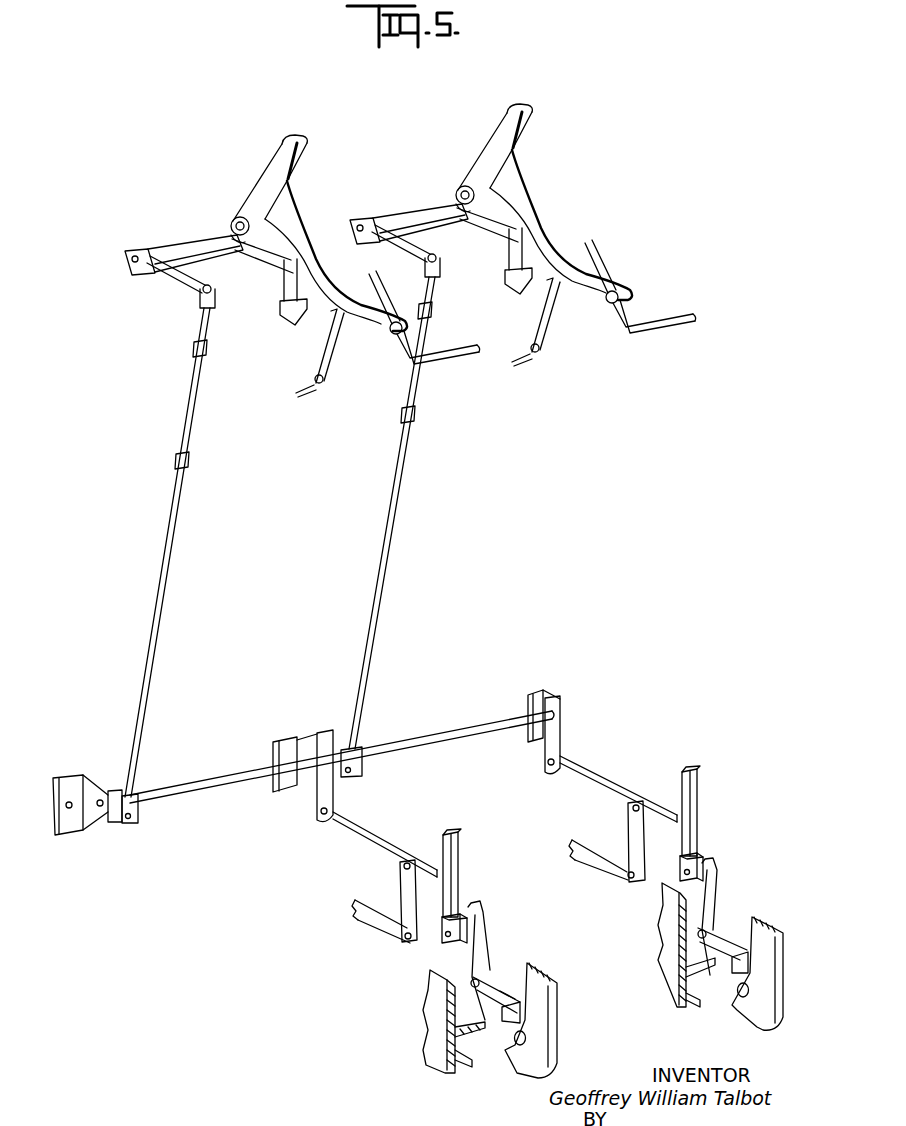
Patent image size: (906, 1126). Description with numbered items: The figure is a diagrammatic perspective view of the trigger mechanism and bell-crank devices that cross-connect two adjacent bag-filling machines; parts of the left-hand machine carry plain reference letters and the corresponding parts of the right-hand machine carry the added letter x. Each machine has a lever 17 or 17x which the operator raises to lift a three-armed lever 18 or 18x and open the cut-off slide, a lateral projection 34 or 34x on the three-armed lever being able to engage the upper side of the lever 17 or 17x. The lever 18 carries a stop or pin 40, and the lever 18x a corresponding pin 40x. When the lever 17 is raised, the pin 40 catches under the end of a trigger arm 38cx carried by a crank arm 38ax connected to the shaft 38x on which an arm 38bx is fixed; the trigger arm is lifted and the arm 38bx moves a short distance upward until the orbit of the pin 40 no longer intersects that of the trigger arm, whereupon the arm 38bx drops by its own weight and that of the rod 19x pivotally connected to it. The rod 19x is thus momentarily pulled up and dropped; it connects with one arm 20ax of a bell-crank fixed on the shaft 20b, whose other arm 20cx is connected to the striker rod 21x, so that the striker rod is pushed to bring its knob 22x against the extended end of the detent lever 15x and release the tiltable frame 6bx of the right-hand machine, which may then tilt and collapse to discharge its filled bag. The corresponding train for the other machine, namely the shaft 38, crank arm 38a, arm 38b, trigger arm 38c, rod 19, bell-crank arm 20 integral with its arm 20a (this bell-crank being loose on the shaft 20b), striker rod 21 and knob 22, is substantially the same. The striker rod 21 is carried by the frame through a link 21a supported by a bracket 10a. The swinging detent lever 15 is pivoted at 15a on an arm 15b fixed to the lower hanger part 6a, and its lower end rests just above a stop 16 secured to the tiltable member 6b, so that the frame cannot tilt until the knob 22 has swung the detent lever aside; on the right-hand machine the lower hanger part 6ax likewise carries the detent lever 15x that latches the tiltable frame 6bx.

The three-armed lever 18 is at (310, 233).
The three-armed lever 18x is at (492, 141).
The shaft 38 is at (418, 206).
The shaft 38x is at (185, 237).
The crank arm 38a is at (480, 234).
The crank arm 38ax is at (260, 271).
The arm 38b is at (411, 251).
The arm 38bx is at (166, 285).
The trigger arm 38c is at (509, 269).
The trigger arm 38cx is at (267, 296).
The stop 40 is at (332, 353).
The stop 40x is at (550, 253).
The lateral projection 34 is at (385, 317).
The lateral projection 34x is at (607, 307).
The lever 17 is at (438, 364).
The lever 17x is at (680, 331).
The rod 19 is at (385, 569).
The rod 19x is at (168, 578).
The bell-crank arm 20 is at (322, 796).
The bell-crank arm 20a is at (343, 735).
The bell-crank arm 20ax is at (122, 790).
The shaft 20b is at (430, 738).
The bell-crank arm 20cx is at (545, 750).
The striker rod 21 is at (367, 824).
The striker rod 21x is at (600, 780).
The link 21a is at (399, 880).
The bracket 10a is at (377, 927).
The striker knob 22 is at (443, 941).
The striker knob 22x is at (678, 873).
The swinging detent lever 15 is at (486, 914).
The swinging detent lever 15x is at (716, 873).
The pivot 15a is at (472, 978).
The arm 15b is at (507, 979).
The stop 16 is at (478, 1040).
The lower part of the hanger 6a is at (543, 1023).
The lower part of the hanger 6ax is at (770, 937).
The tiltable member 6b is at (480, 1076).
The tiltable frame 6bx is at (697, 1006).